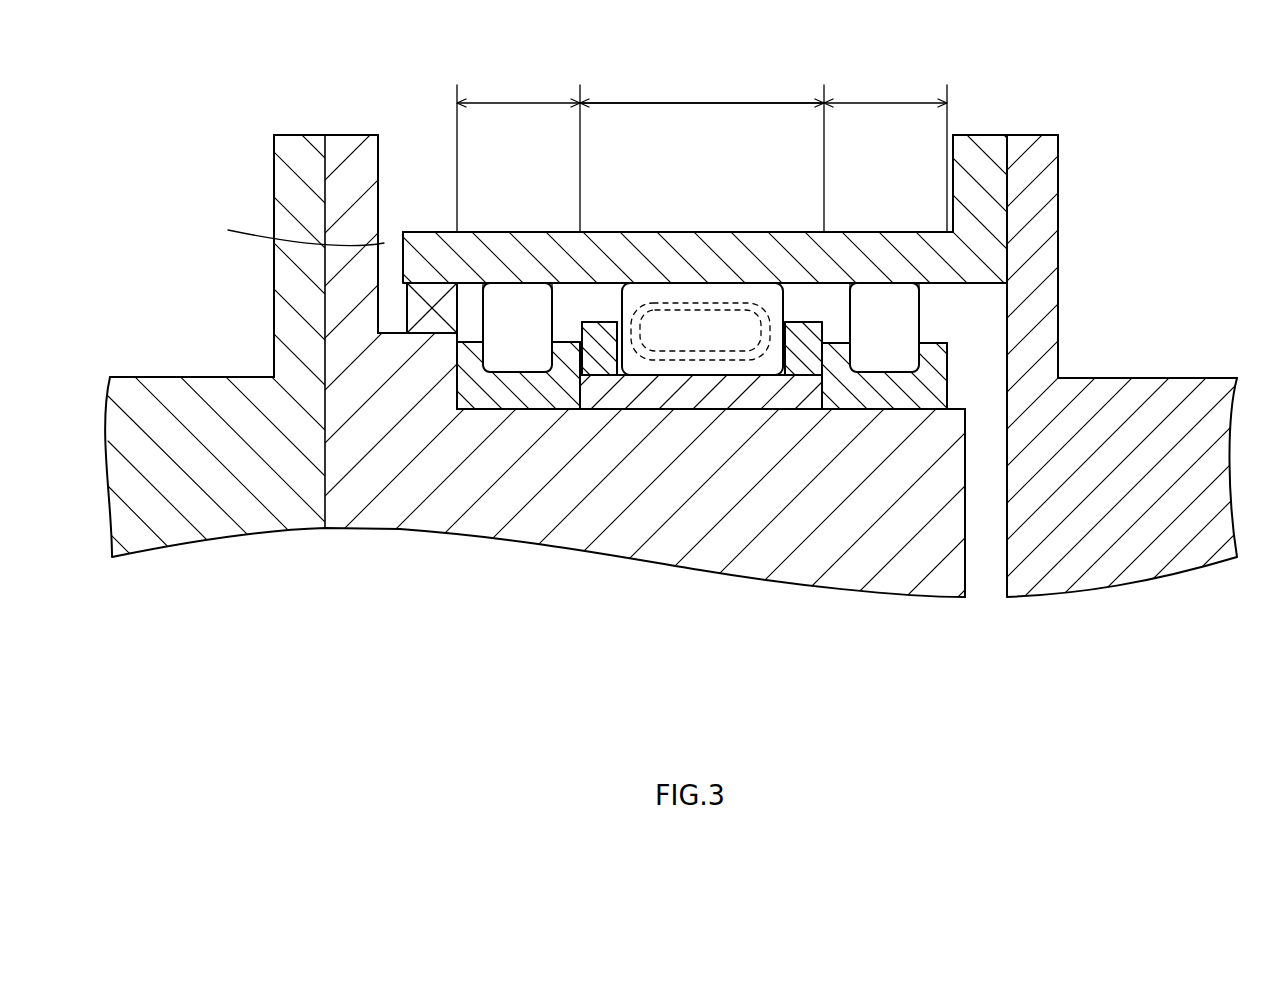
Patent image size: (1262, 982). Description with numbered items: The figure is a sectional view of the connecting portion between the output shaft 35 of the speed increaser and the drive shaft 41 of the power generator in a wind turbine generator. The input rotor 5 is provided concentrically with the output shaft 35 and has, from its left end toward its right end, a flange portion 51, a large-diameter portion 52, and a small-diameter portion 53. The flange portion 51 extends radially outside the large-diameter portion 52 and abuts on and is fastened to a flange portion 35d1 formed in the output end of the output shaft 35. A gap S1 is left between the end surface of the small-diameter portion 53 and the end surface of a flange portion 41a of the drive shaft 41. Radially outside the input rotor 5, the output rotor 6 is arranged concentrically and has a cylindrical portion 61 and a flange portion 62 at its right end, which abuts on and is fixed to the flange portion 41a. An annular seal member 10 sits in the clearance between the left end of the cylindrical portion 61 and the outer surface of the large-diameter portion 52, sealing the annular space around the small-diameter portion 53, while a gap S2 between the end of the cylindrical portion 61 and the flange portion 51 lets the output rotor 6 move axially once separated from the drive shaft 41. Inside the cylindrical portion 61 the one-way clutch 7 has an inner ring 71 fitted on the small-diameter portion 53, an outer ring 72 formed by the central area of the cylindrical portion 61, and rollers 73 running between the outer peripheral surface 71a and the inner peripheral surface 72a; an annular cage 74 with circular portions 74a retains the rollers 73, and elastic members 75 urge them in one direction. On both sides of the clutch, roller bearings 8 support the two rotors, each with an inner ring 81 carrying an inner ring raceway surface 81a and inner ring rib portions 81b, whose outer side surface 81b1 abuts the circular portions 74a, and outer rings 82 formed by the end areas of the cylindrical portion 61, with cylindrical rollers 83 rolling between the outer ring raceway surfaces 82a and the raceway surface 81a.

The input rotor 5 is at (373, 534).
The flange portion 51 is at (348, 135).
The large-diameter portion 52 is at (392, 330).
The small-diameter portion 53 is at (952, 407).
The output shaft 35 is at (172, 372).
The flange portion 35d1 is at (299, 135).
The gap S2 is at (292, 230).
The gap S1 is at (995, 548).
The annular seal member 10 is at (437, 297).
The output rotor 6 is at (840, 229).
The cylindrical portion 61 is at (759, 229).
The flange portion 62 is at (990, 135).
The drive shaft 41 is at (1148, 374).
The flange portion 41a is at (1031, 135).
The one-way clutch 7 is at (740, 414).
The inner ring 71 is at (683, 396).
The outer peripheral surface 71a is at (650, 373).
The outer ring 72 is at (700, 100).
The inner peripheral surface 72a is at (676, 290).
The rollers 73 is at (736, 290).
The annular cage 74 is at (590, 340).
The circular portions 74a is at (608, 322).
The elastic members 75 is at (698, 292).
The roller bearings 8 is at (492, 414).
The inner ring 81 is at (477, 395).
The inner ring raceway surface 81a is at (540, 370).
The inner ring rib portions 81b is at (468, 340).
The outer side surface 81b1 is at (578, 350).
The outer rings 82 is at (511, 100).
The outer ring raceway surfaces 82a is at (510, 297).
The cylindrical rollers 83 is at (534, 300).